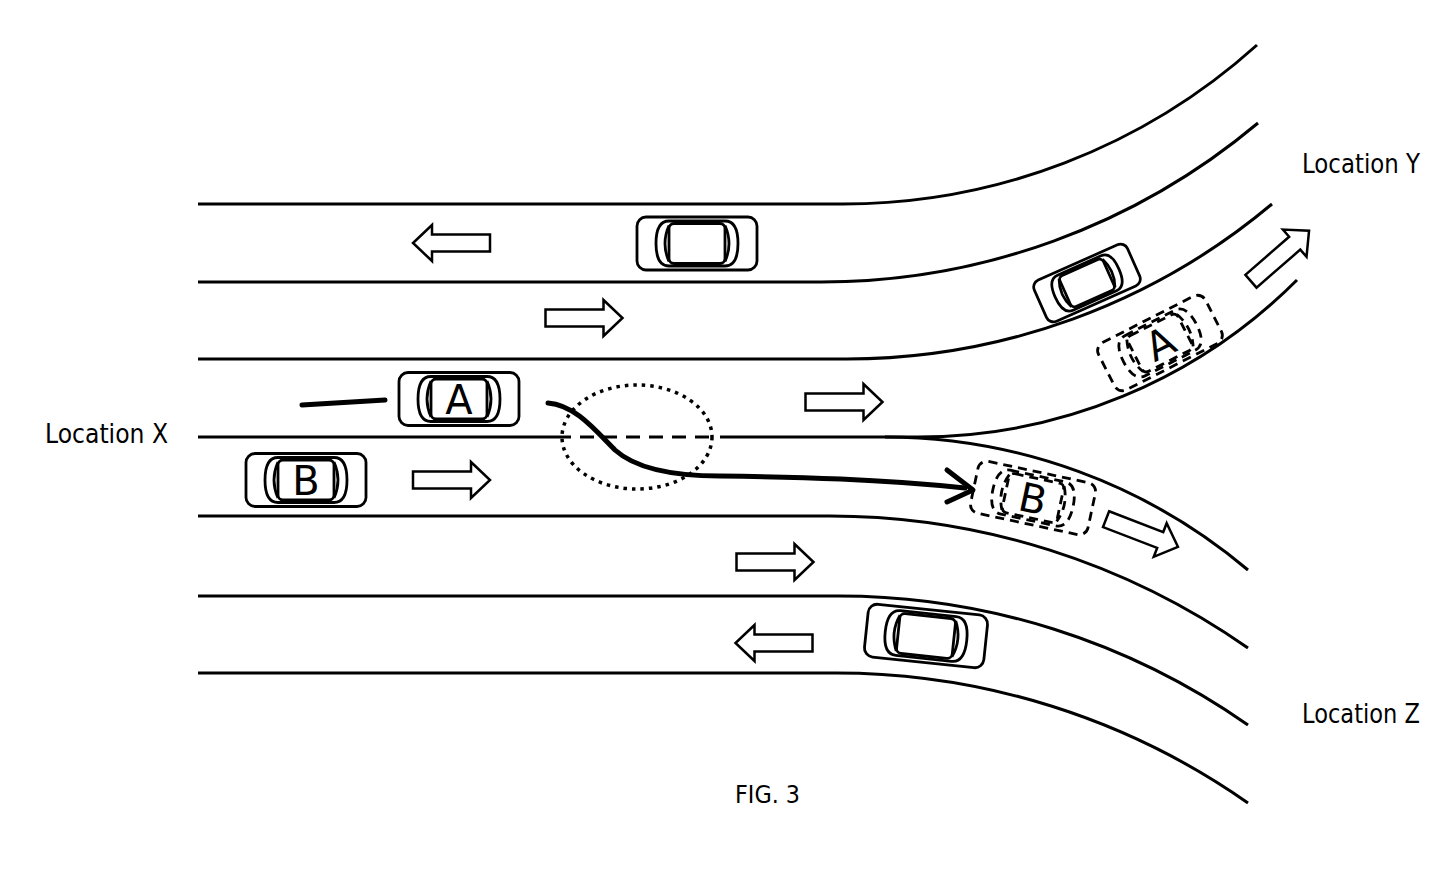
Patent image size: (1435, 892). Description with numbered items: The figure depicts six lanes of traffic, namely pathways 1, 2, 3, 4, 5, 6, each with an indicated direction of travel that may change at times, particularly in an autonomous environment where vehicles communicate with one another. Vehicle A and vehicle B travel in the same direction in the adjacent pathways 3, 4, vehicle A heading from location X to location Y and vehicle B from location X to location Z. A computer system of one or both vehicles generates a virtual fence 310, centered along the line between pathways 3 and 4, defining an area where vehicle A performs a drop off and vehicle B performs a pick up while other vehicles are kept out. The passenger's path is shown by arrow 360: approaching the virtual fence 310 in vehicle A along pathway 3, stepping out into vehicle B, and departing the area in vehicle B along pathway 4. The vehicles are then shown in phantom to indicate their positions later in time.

The pathway 1 is at (727, 156).
The pathway 2 is at (728, 237).
The pathway 3 is at (735, 314).
The pathway 4 is at (747, 425).
The pathway 5 is at (723, 582).
The pathway 6 is at (723, 699).
The virtual fence 310 is at (690, 397).
The arrow 360 is at (887, 475).